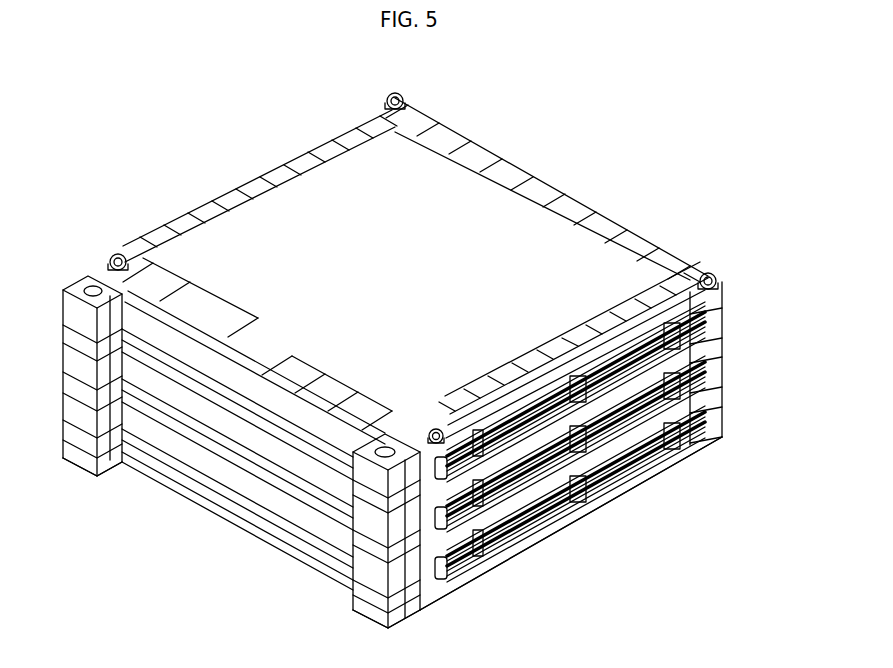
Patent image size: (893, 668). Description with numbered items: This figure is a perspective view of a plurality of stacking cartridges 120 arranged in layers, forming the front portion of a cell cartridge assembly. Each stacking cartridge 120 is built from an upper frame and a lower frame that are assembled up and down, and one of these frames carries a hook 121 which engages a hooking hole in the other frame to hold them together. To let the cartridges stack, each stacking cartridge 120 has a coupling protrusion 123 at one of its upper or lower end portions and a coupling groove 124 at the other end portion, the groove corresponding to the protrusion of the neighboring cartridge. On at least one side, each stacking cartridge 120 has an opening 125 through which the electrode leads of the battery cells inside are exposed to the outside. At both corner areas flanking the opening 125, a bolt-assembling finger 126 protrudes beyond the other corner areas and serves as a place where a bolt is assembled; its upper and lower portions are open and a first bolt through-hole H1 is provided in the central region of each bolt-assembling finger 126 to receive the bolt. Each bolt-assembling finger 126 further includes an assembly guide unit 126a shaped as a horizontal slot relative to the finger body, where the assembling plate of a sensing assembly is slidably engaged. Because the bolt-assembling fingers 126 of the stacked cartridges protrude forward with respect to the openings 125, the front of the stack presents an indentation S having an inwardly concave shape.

The stacking cartridge 120 is at (742, 308).
The hook 121 is at (677, 438).
The coupling protrusion 123 is at (712, 438).
The coupling groove 124 is at (395, 94).
The opening 125 is at (267, 387).
The bolt-assembling finger 126 is at (80, 306).
The assembly guide unit 126a is at (353, 487).
The first bolt through-hole H1 is at (88, 286).
The indentation S is at (143, 372).